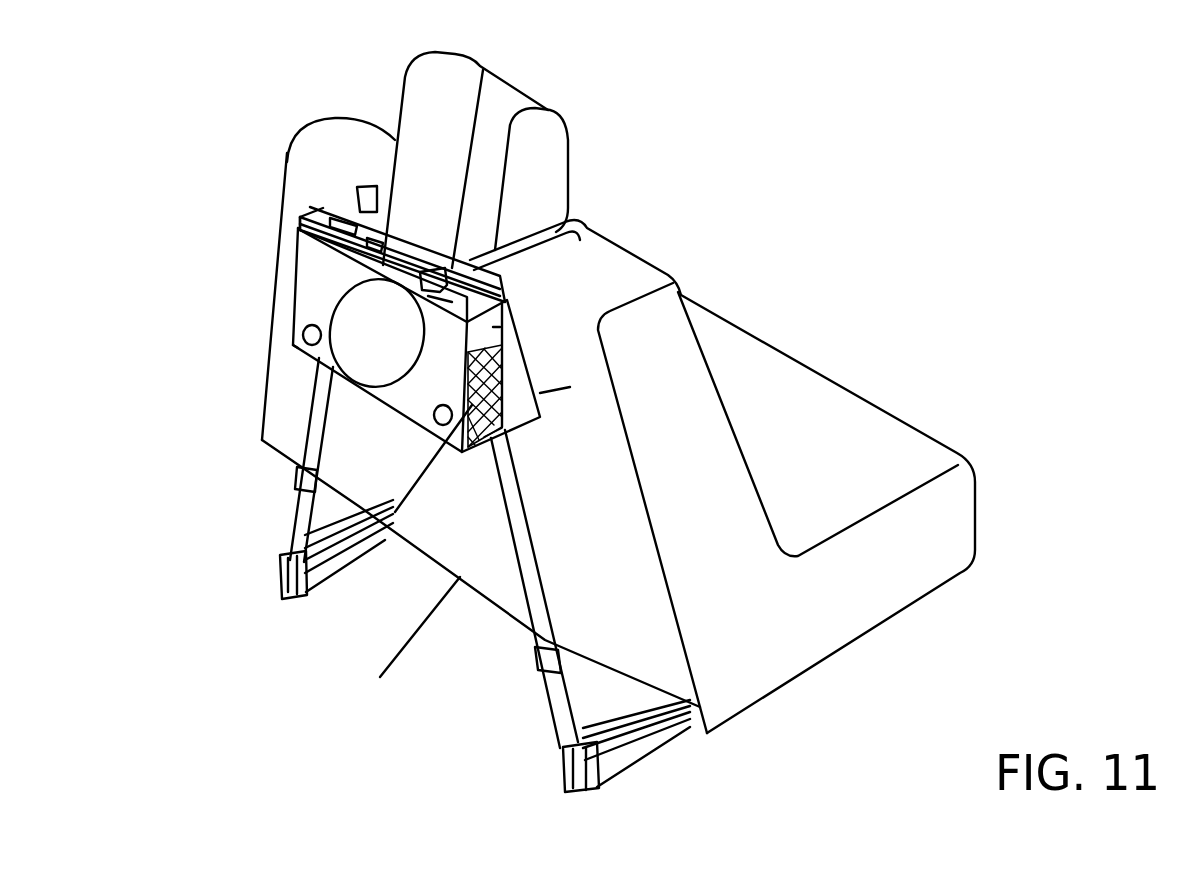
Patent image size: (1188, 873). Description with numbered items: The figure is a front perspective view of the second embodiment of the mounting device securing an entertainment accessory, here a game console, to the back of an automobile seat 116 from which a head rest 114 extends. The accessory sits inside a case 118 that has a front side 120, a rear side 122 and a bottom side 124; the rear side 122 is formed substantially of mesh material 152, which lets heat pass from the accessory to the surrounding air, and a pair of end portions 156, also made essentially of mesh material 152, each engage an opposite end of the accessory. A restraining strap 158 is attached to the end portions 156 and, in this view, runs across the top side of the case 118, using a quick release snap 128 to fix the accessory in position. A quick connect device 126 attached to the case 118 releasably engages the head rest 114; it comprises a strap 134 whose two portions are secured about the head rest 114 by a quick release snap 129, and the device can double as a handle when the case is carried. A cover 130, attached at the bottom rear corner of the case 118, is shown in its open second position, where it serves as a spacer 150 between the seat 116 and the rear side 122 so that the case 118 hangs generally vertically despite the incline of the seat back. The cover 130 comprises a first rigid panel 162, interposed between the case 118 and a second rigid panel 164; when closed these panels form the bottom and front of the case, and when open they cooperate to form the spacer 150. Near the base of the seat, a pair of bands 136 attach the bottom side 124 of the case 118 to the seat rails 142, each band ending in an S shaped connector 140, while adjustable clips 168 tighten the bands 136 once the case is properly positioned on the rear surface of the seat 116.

The head rest 114 is at (550, 112).
The seat 116 is at (580, 263).
The case 118 is at (297, 308).
The front side 120 is at (303, 278).
The rear side 122 is at (557, 440).
The bottom side 124 is at (307, 353).
The quick connect device 126 is at (725, 106).
The quick release snap 128 is at (437, 300).
The quick release snap 129 is at (363, 187).
The cover 130 is at (540, 393).
The strap 134 is at (578, 220).
The bands 136 is at (308, 420).
The S shaped connector 140 is at (288, 576).
The seat rail 142 is at (306, 592).
The spacer 150 is at (570, 367).
The mesh material 152 is at (472, 405).
The end portions 156 is at (300, 233).
The restraining strap 158 is at (343, 237).
The first rigid panel 162 is at (520, 420).
The second rigid panel 164 is at (522, 340).
The adjustable clips 168 is at (297, 483).